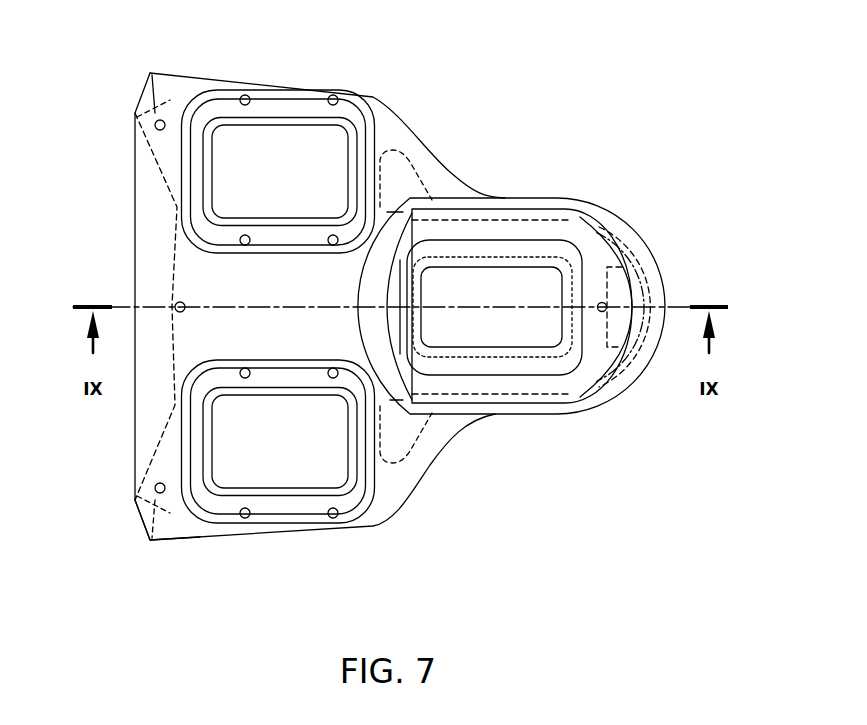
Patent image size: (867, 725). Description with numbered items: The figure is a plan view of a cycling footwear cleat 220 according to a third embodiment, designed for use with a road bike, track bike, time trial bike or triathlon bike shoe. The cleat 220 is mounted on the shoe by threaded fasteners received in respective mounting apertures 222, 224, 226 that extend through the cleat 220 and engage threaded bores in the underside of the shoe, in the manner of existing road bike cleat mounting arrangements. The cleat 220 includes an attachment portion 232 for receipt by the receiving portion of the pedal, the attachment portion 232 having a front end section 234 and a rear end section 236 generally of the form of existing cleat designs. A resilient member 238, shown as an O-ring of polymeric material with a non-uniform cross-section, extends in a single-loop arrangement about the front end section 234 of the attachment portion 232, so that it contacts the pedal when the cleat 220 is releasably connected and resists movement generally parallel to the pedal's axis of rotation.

The cleat 220 is at (426, 470).
The mounting aperture 222 is at (488, 333).
The mounting aperture 224 is at (283, 472).
The mounting aperture 226 is at (283, 142).
The attachment portion 232 is at (393, 413).
The front end section 234 is at (632, 332).
The rear end section 236 is at (150, 540).
The resilient member 238 is at (547, 415).